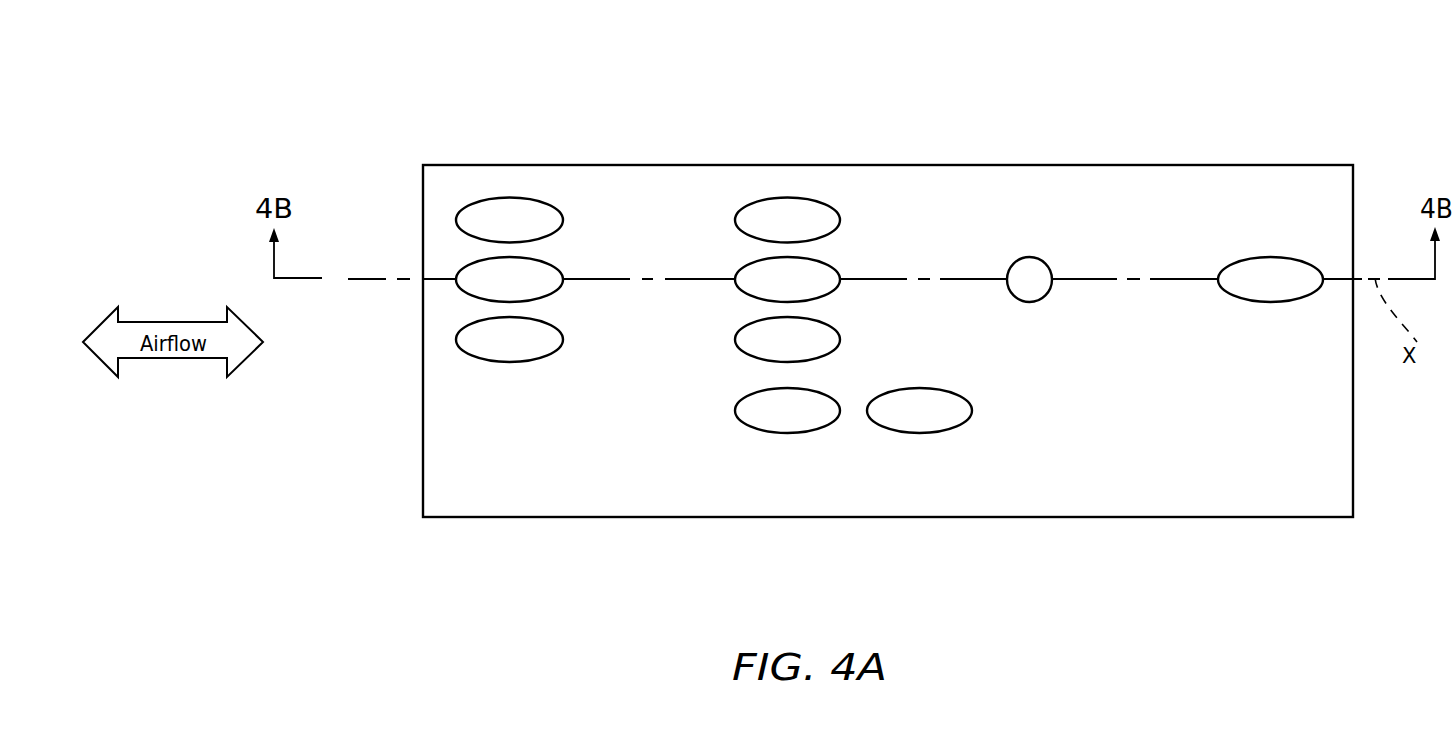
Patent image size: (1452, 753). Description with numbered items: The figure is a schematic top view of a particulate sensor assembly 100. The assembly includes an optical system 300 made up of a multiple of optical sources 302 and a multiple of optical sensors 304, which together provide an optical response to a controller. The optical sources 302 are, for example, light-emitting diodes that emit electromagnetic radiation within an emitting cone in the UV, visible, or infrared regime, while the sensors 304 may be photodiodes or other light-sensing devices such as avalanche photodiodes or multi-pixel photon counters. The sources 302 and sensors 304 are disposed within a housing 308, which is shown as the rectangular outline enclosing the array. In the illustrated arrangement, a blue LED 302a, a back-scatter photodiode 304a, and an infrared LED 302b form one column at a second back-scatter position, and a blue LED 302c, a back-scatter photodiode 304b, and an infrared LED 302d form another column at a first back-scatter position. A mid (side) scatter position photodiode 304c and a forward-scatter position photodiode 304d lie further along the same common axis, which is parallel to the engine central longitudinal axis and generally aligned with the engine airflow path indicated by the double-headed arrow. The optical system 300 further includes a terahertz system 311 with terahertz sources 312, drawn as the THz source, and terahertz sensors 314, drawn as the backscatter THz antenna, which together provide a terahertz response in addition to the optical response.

The particulate sensor assembly 100 is at (894, 279).
The optical system 300 is at (1157, 264).
The optical sources 302 is at (400, 231).
The blue LED 302a is at (540, 198).
The infrared LED 302b is at (558, 330).
The blue LED 302c is at (820, 198).
The infrared LED 302d is at (838, 330).
The optical sensors 304 is at (410, 290).
The back-scatter photodiode 304a is at (552, 262).
The back-scatter photodiode 304b is at (832, 262).
The mid (side) scatter position photodiode 304c is at (1037, 257).
The forward-scatter position photodiode 304d is at (1278, 257).
The housing 308 is at (1253, 465).
The terahertz (THz) system 311 is at (837, 488).
The terahertz (THz) sources 312 is at (735, 410).
The terahertz (THz) sensors 314 is at (972, 412).